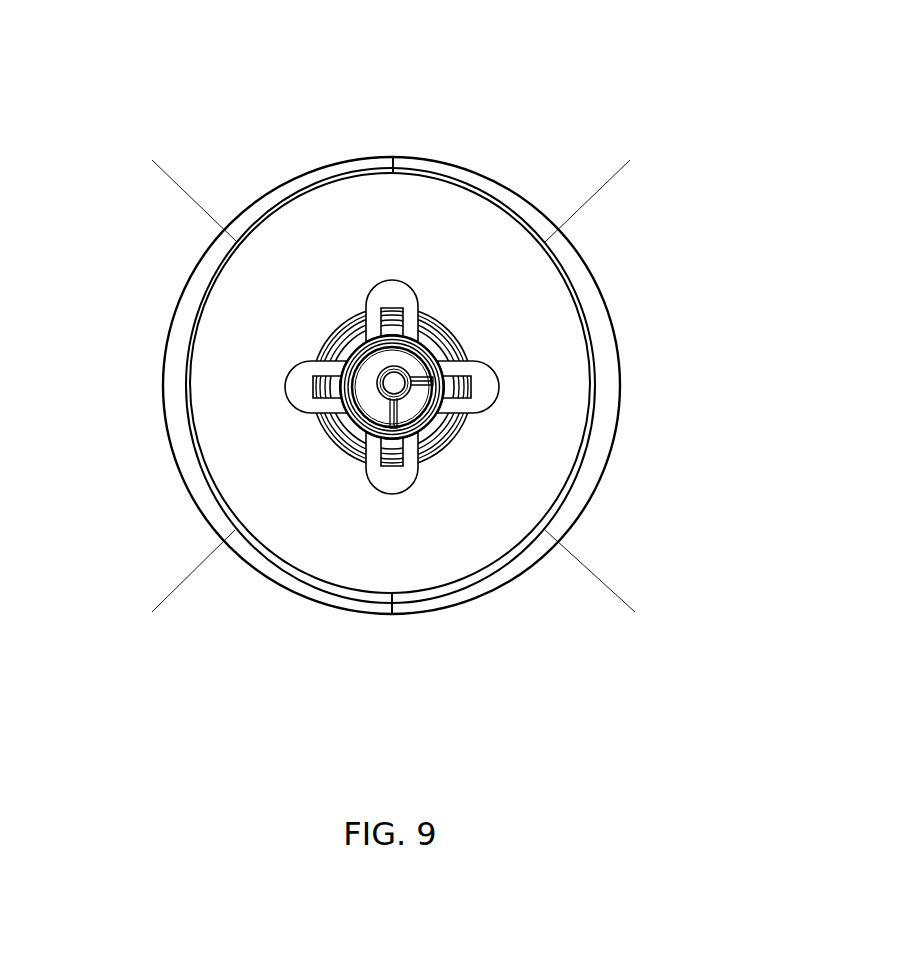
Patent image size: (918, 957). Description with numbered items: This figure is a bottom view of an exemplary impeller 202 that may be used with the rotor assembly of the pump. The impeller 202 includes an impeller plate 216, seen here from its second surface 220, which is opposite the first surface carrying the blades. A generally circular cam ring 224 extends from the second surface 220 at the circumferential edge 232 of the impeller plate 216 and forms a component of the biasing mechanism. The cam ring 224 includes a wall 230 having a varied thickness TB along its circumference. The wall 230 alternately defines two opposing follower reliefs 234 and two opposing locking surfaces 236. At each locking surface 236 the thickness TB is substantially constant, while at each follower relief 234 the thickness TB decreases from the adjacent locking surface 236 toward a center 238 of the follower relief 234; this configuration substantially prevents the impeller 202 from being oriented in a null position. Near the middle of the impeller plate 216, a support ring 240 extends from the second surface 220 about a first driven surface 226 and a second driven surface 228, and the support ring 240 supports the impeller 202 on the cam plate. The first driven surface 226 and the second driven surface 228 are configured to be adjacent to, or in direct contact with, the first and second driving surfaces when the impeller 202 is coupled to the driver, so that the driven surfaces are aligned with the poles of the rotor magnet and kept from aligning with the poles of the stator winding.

The impeller 202 is at (692, 293).
The impeller plate 216 is at (257, 472).
The second surface 220 is at (410, 227).
The cam ring 224 is at (608, 387).
The first driven surface 226 is at (457, 437).
The second driven surface 228 is at (467, 423).
The wall 230 is at (173, 380).
The circumferential edge 232 is at (593, 265).
The follower relief 234 is at (173, 175).
The locking surface 236 is at (202, 462).
The center of follower relief 238 is at (395, 161).
The support ring 240 is at (343, 343).
The thickness TB is at (565, 358).